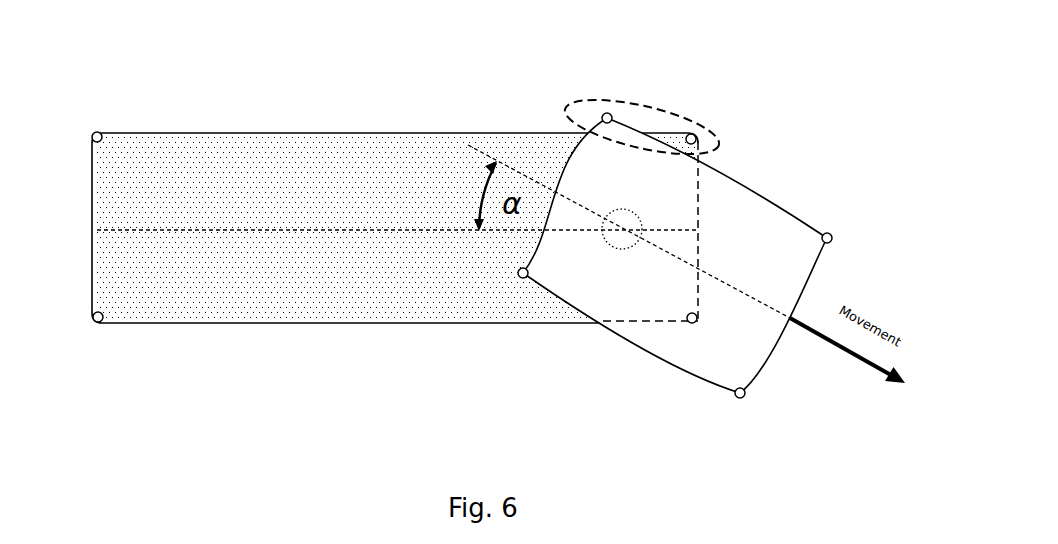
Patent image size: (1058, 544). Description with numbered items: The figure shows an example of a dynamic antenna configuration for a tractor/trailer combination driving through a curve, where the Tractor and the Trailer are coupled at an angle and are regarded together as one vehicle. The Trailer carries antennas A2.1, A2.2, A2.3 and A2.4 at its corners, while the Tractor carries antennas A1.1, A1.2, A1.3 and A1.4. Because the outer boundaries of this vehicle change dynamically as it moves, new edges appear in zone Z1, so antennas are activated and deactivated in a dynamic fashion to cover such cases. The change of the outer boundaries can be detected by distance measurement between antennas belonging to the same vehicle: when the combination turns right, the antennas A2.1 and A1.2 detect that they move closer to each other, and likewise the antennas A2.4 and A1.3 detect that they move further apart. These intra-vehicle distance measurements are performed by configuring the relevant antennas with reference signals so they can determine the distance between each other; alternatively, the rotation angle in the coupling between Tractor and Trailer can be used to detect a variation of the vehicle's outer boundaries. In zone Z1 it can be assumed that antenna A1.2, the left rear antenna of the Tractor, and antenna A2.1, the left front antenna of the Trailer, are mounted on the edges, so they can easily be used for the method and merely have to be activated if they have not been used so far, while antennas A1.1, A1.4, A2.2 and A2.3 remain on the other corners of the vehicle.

The antenna A1.1 is at (831, 237).
The left rear antenna of the tractor A1.2 is at (605, 115).
The antenna A1.3 is at (521, 277).
The antenna A1.4 is at (744, 397).
The left front antenna of the trailer A2.1 is at (694, 136).
The antenna A2.2 is at (95, 134).
The antenna A2.3 is at (96, 321).
The antenna A2.4 is at (691, 323).
The zone Z1 is at (641, 118).
The trailer Trailer is at (283, 132).
The tractor Tractor is at (787, 185).